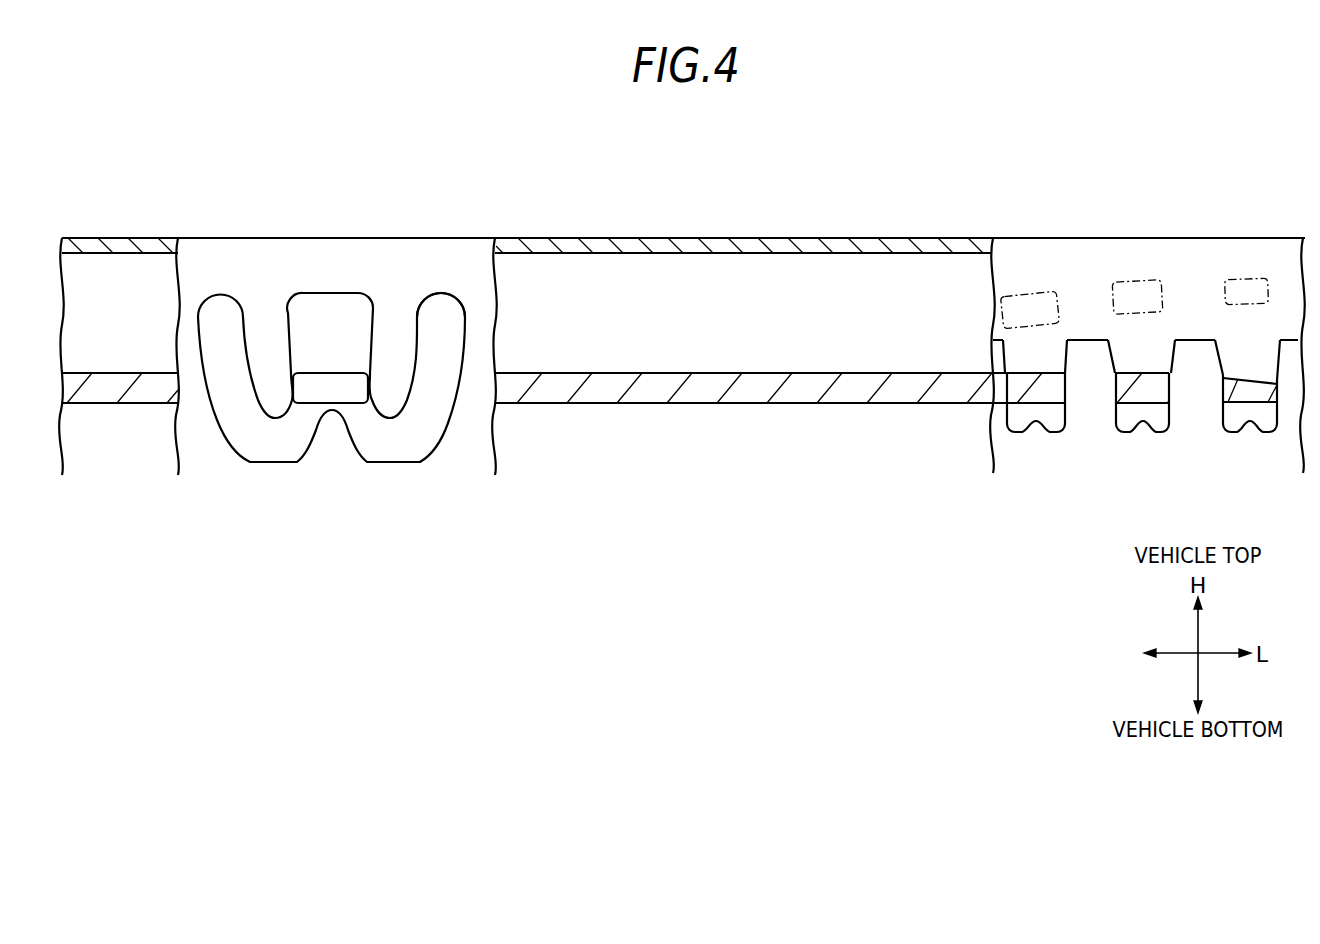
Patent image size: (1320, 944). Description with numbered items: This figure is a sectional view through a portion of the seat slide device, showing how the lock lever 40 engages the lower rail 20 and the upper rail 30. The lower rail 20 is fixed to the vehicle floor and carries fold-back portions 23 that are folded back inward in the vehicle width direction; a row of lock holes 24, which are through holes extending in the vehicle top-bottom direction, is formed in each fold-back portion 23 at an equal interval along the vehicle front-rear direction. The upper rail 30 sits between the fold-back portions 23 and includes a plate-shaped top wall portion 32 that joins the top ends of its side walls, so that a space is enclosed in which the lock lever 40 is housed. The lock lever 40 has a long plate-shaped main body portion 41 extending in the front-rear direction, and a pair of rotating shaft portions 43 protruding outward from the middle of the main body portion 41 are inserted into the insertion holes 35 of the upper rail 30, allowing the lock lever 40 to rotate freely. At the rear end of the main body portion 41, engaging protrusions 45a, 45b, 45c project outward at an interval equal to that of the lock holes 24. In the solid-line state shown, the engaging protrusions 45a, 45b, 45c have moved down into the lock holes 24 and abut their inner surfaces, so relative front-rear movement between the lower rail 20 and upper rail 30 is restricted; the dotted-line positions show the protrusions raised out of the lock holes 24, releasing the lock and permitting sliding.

The lower rail 20 is at (1127, 355).
The fold-back portion 23 is at (1082, 340).
The lock hole 24 is at (1010, 367).
The upper rail 30 is at (682, 330).
The top wall portion 32 is at (660, 243).
The insertion hole 35 is at (447, 307).
The lock lever 40 is at (563, 393).
The main body portion 41 is at (650, 403).
The rotating shaft portion 43 is at (310, 397).
The engaging protrusion 45a is at (1023, 293).
The engaging protrusion 45b is at (1130, 280).
The engaging protrusion 45c is at (1243, 277).